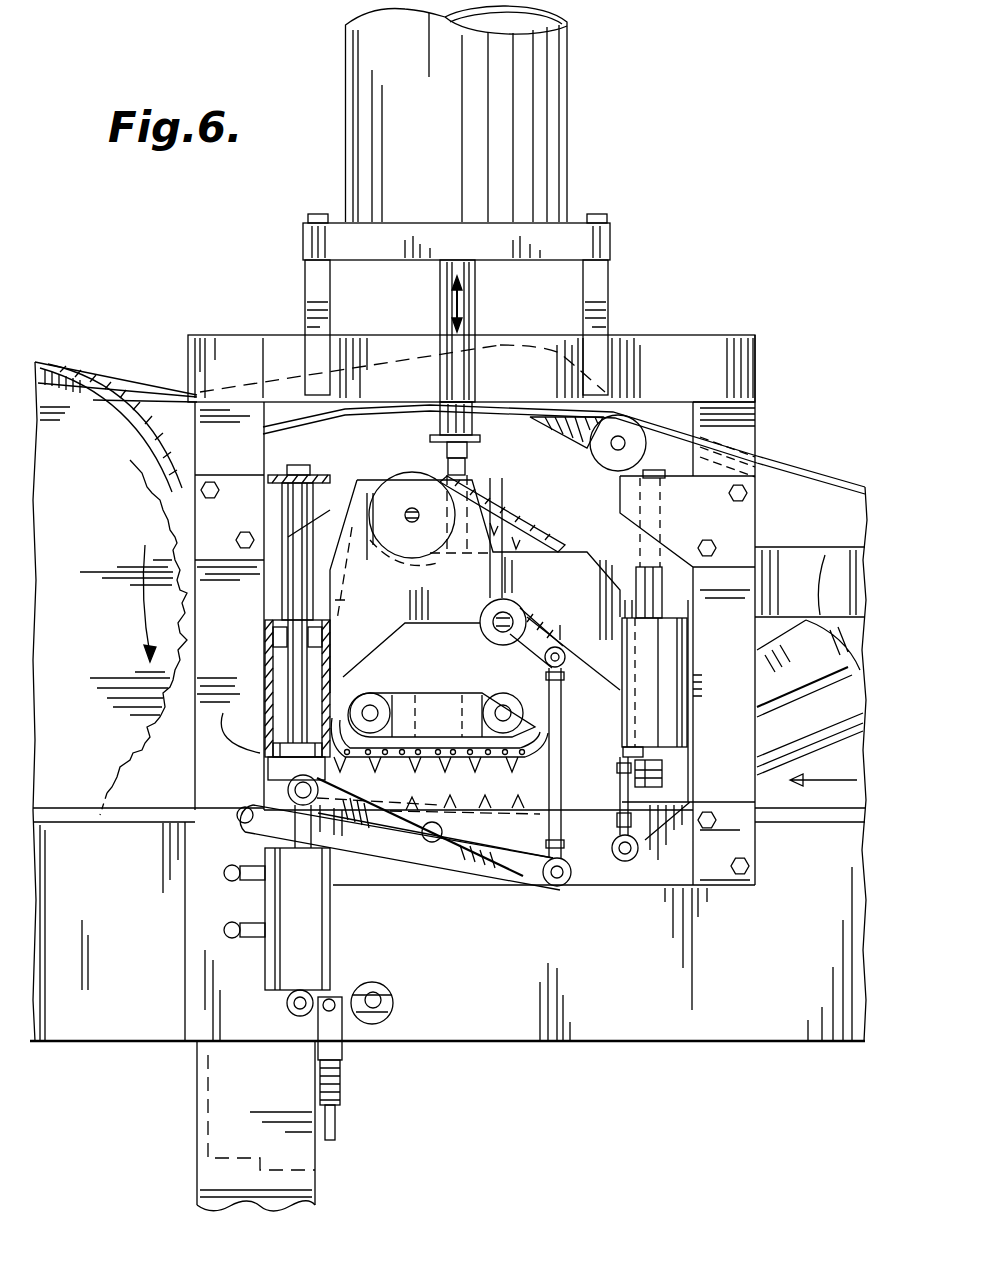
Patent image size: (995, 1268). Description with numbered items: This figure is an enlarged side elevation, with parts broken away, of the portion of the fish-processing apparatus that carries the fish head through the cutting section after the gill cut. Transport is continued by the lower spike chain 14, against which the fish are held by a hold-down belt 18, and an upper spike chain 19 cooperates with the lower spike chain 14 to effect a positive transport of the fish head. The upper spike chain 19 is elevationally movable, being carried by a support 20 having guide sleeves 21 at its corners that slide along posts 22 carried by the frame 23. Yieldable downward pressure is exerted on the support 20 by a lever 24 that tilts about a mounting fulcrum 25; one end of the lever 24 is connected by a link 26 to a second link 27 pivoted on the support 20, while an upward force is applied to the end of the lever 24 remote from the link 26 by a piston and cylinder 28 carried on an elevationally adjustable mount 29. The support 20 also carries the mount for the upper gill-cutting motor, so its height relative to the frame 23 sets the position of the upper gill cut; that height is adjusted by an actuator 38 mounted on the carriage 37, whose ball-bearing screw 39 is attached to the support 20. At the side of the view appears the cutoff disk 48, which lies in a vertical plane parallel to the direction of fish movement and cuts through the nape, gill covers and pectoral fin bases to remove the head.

The lower spike chain 14 is at (522, 805).
The hold-down belt 18 is at (820, 478).
The upper spike chain 19 is at (475, 690).
The support 20 is at (462, 590).
The guide sleeves 21 is at (300, 690).
The posts 22 is at (290, 585).
The frame 23 is at (655, 350).
The lever 24 is at (398, 881).
The mounting fulcrum 25 is at (430, 833).
The link 26 is at (563, 700).
The second link 27 is at (540, 553).
The piston and cylinder 28 is at (265, 962).
The elevationally adjustable mount 29 is at (378, 1003).
The carriage 37 is at (780, 360).
The actuator 38 is at (556, 80).
The ball-bearing screw 39 is at (472, 478).
The cutoff disk 48 is at (103, 738).